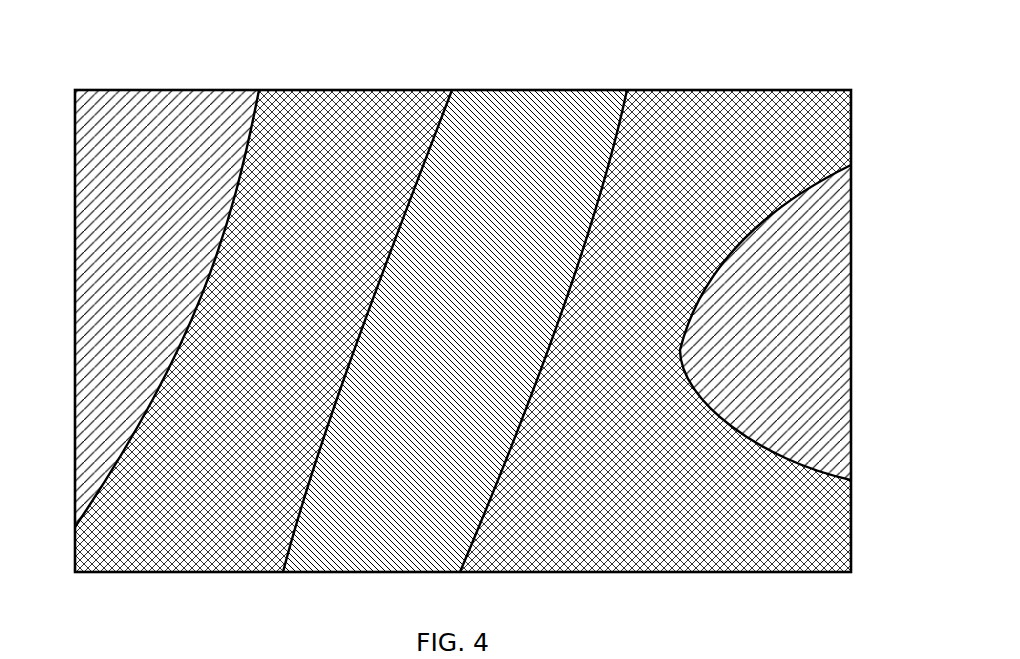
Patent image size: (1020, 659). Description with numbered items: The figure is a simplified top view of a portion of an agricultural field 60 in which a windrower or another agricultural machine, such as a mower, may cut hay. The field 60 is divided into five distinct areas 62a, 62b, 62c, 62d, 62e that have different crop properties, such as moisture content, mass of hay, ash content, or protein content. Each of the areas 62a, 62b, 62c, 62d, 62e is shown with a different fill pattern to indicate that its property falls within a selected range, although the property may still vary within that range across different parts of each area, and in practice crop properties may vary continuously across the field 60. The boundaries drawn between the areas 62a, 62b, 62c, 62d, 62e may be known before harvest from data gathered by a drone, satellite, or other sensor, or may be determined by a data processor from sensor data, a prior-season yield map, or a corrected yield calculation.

The agricultural field 60 is at (130, 107).
The area 62a is at (108, 265).
The area 62b is at (157, 540).
The area 62c is at (350, 556).
The area 62d is at (516, 550).
The area 62e is at (765, 322).